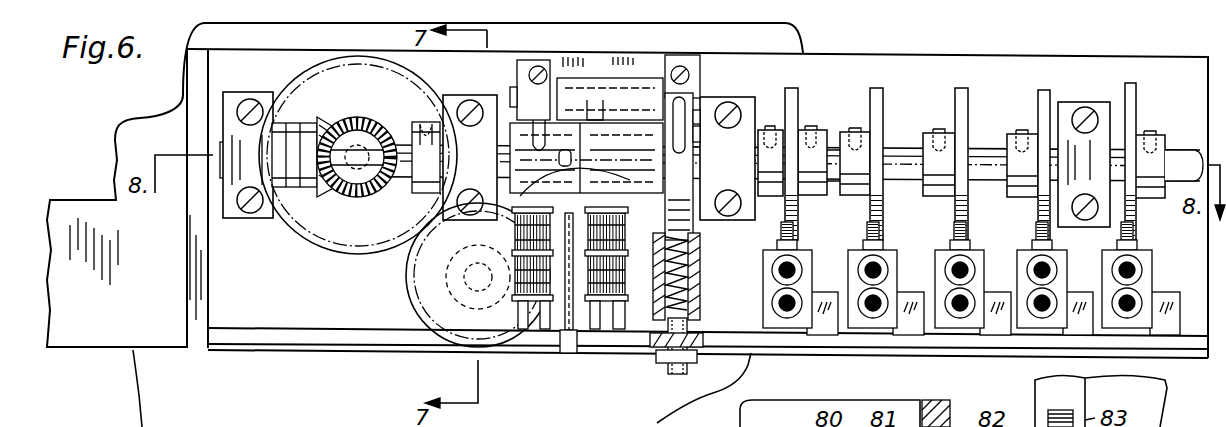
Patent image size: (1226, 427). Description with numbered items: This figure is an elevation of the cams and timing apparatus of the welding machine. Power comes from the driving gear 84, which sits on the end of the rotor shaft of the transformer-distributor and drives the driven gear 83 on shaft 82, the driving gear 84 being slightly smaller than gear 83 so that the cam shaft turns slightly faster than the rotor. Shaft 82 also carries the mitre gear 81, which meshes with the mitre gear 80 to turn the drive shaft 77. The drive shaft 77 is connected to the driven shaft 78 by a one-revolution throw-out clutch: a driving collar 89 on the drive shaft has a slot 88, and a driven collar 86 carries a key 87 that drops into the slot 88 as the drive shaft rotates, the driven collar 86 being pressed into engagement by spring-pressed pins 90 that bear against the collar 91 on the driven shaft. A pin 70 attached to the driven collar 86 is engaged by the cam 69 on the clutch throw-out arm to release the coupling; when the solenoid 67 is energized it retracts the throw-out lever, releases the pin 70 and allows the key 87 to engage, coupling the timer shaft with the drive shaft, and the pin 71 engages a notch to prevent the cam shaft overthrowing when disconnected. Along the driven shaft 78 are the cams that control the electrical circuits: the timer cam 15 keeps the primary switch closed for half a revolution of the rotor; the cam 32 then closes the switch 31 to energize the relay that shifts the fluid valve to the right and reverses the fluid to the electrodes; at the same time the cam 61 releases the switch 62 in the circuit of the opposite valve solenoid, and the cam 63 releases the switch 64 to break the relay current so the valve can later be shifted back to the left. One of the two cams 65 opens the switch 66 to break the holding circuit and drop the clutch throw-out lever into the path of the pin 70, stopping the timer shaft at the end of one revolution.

The timer cam 15 is at (1136, 100).
The switch 31 is at (892, 253).
The cam 32 is at (883, 98).
The cam 61 is at (798, 218).
The switch 62 is at (777, 320).
The cam 63 is at (973, 253).
The switch 64 is at (968, 98).
The cam 65 is at (1050, 96).
The switch 66 is at (1060, 258).
The solenoid 67 is at (617, 303).
The cam 69 is at (596, 100).
The pin 70 is at (627, 123).
The pin 71 is at (693, 220).
The drive shaft 77 is at (393, 187).
The driven shaft 78 is at (830, 153).
The mitre gear 80 is at (322, 193).
The mitre gear 81 is at (365, 120).
The shaft 82 is at (358, 180).
The driven gear 83 is at (380, 254).
The driving gear 84 is at (422, 317).
The driven collar 86 is at (670, 90).
The key 87 is at (637, 187).
The slot 88 is at (530, 185).
The driving collar 89 is at (515, 130).
The spring-pressed pin 90 is at (693, 117).
The collar 91 is at (694, 131).